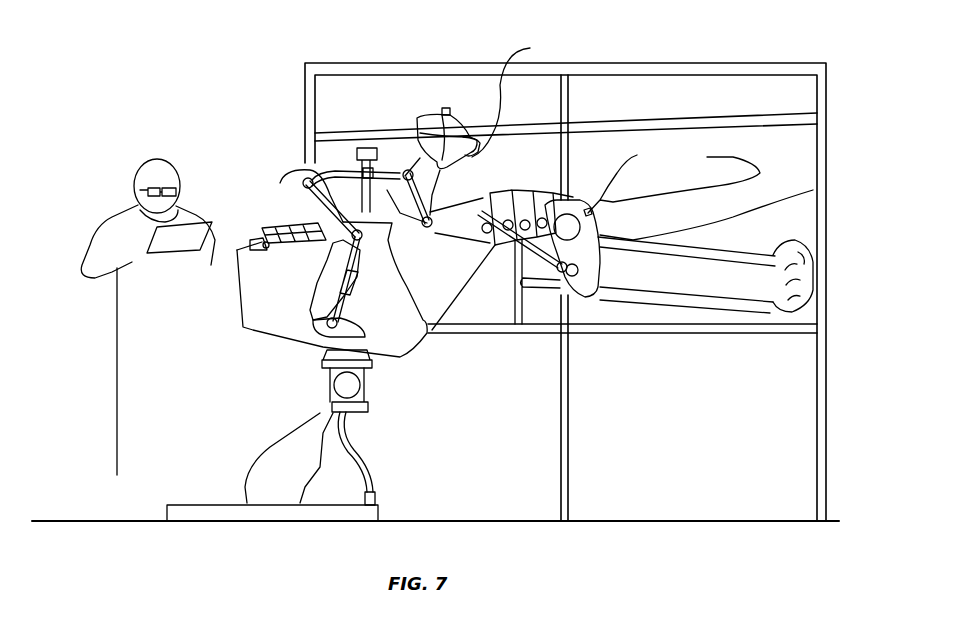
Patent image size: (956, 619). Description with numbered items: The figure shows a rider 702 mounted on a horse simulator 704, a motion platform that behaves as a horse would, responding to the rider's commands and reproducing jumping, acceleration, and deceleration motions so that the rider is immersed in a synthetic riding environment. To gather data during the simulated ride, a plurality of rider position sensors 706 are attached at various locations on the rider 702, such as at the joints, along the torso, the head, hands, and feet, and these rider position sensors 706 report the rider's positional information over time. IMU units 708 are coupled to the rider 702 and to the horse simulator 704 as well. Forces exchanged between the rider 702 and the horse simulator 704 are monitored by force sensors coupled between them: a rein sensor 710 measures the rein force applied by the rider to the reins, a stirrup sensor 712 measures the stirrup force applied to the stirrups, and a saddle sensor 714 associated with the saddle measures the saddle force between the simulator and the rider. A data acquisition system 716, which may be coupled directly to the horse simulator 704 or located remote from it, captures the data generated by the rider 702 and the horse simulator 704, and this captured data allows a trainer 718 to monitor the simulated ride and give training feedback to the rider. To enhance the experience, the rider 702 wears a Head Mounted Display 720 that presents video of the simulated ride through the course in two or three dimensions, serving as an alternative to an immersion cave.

The rider 702 is at (318, 108).
The horse simulator 704 is at (250, 337).
The rider position sensors 706 is at (503, 425).
The IMU units 708 is at (357, 148).
The rein sensor 710 is at (552, 327).
The stirrup sensor 712 is at (320, 363).
The saddle sensor 714 is at (293, 227).
The data acquisition system 716 is at (253, 233).
The trainer 718 is at (118, 230).
The Head Mounted Display (HMD) 720 is at (530, 48).